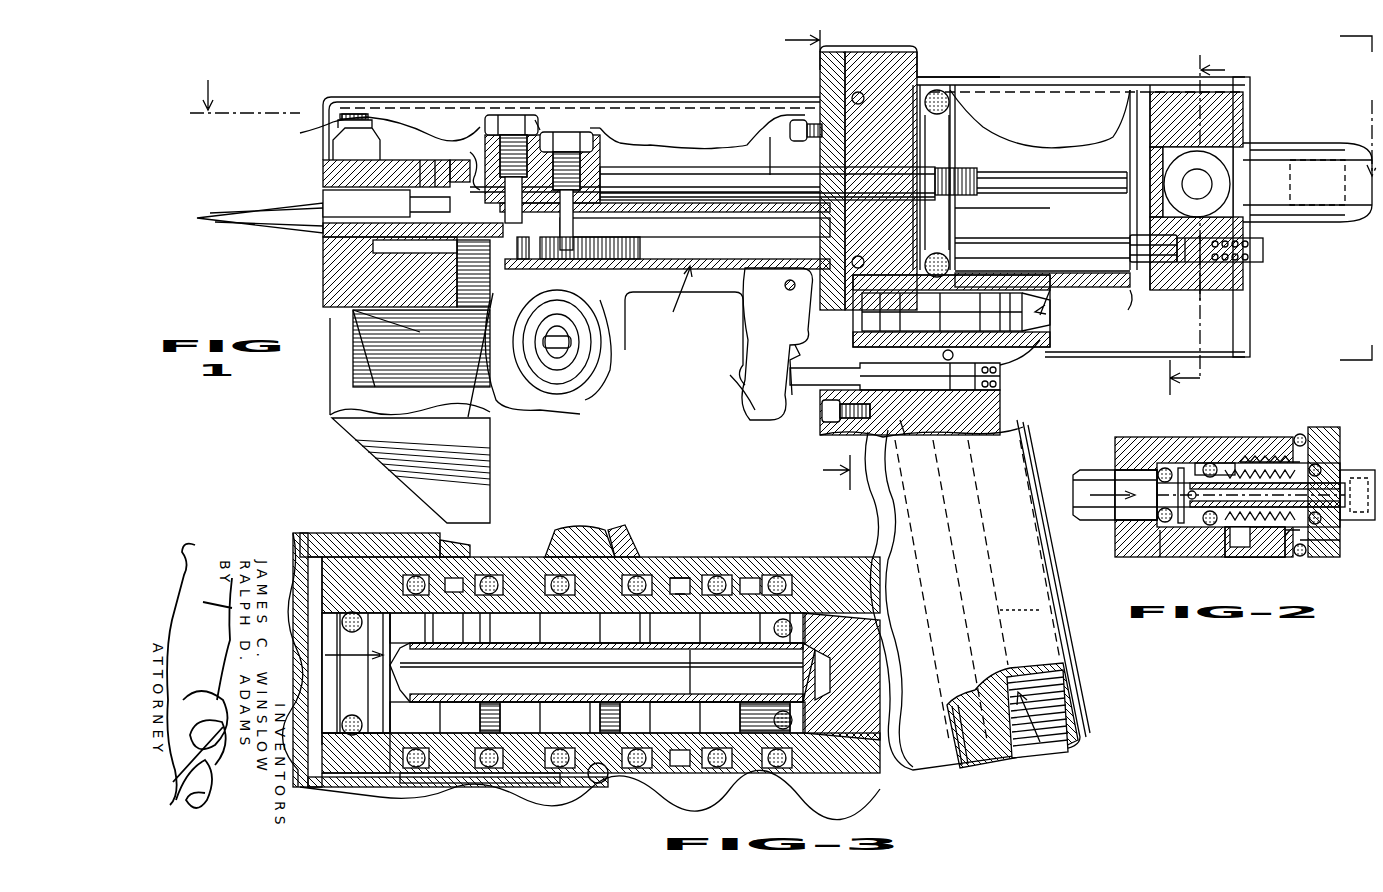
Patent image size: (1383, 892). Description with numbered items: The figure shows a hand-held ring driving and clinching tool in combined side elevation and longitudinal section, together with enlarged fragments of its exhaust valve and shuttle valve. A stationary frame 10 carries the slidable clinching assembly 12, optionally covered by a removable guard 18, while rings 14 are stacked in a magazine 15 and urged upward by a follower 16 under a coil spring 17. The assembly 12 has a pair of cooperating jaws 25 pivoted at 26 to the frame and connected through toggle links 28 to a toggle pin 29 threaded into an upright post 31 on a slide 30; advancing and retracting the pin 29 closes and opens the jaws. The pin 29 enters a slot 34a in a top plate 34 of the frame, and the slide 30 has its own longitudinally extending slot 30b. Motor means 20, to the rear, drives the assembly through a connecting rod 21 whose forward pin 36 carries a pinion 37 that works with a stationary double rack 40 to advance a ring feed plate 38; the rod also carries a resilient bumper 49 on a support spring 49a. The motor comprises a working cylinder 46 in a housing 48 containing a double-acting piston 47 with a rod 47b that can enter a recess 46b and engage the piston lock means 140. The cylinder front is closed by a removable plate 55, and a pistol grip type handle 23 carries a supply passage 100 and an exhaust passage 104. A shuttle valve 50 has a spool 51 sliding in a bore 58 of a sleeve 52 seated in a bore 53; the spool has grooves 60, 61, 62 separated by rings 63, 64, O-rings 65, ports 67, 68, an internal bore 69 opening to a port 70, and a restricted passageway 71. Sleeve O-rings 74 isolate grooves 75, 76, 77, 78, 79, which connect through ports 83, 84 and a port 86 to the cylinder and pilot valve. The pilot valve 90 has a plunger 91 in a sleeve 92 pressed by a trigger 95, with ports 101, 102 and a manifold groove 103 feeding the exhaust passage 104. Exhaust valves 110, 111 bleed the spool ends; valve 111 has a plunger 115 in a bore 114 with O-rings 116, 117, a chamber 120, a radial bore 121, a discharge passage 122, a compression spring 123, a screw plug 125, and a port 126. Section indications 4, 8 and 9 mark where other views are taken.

In FIG. 1, the section line 4- 4 is at (780, 127).
In FIG. 1, the section line 8- 8 is at (807, 260).
In FIG. 1, the section line 9- 9 is at (1204, 225).
In FIG. 1, the stationary frame 10 is at (1022, 207).
In FIG. 1, the clinching assembly 12 is at (410, 154).
In FIG. 1, the rings 14 is at (336, 322).
In FIG. 1, the magazine 15 is at (490, 415).
In FIG. 1, the follower 16 is at (421, 357).
In FIG. 1, the coil spring 17 is at (575, 405).
In FIG. 1, the removable guard 18 is at (698, 120).
In FIG. 1, the motor means 20 is at (1050, 89).
In FIG. 1, the connecting rod 21 is at (788, 182).
In FIG. 1, the pistol grip type handle 23 is at (1020, 600).
In FIG. 1, the cooperating jaws 25 is at (300, 205).
In FIG. 1, the jaw pivot 26 is at (333, 128).
In FIG. 1, the toggle links 28 is at (462, 165).
In FIG. 1, the toggle pin 29 is at (520, 113).
In FIG. 1, the slide 30 is at (522, 260).
In FIG. 1, the longitudinally extending slot 30b is at (655, 205).
In FIG. 1, the upright post 31 is at (565, 130).
In FIG. 1, the top plate 34 is at (820, 195).
In FIG. 1, the slot 34a is at (633, 268).
In FIG. 1, the pin 36 is at (590, 148).
In FIG. 1, the pinion 37 is at (590, 260).
In FIG. 1, the ring feed plate 38 is at (340, 258).
In FIG. 1, the stationary double rack 40 is at (740, 275).
In FIG. 1, the working cylinder 46 is at (1042, 245).
In FIG. 1, the recess 46b is at (1307, 182).
In FIG. 1, the double-acting piston 47 is at (1010, 212).
In FIG. 3, the double-acting piston 47 is at (632, 530).
In FIG. 1, the rod 47b is at (1050, 165).
In FIG. 1, the motor housing 48 is at (1220, 115).
In FIG. 2, the motor housing 48 is at (1125, 455).
In FIG. 3, the motor housing 48 is at (719, 558).
In FIG. 1, the resilient bumper 49 is at (595, 128).
In FIG. 1, the support spring 49a is at (535, 118).
In FIG. 1, the shuttle valve 50 is at (1050, 310).
In FIG. 1, the spool 51 is at (951, 311).
In FIG. 3, the spool 51 is at (455, 655).
In FIG. 3, the sleeve 52 is at (818, 568).
In FIG. 3, the bore 53 is at (385, 600).
In FIG. 1, the removable plate 55 is at (752, 340).
In FIG. 3, the removable plate 55 is at (320, 545).
In FIG. 3, the bore 58 is at (425, 616).
In FIG. 3, the annular groove 60 is at (597, 717).
In FIG. 3, the annular groove 61 is at (570, 715).
In FIG. 3, the annular groove 62 is at (695, 715).
In FIG. 3, the ring 63 is at (530, 640).
In FIG. 3, the ring 64 is at (640, 643).
In FIG. 3, the O-rings 65 is at (360, 735).
In FIG. 3, the port 67 is at (345, 765).
In FIG. 1, the port 68 is at (945, 248).
In FIG. 3, the port 68 is at (350, 610).
In FIG. 3, the internal bore 69 is at (716, 672).
In FIG. 1, the port 70 is at (1050, 325).
In FIG. 3, the port 70 is at (885, 675).
In FIG. 3, the passageway 71 is at (580, 650).
In FIG. 3, the O-rings 74 is at (590, 530).
In FIG. 3, the annular groove 75 is at (460, 575).
In FIG. 3, the annular groove 76 is at (548, 555).
In FIG. 3, the annular groove 77 is at (635, 570).
In FIG. 3, the annular groove 78 is at (680, 575).
In FIG. 3, the annular groove 79 is at (760, 575).
In FIG. 1, the port 83 is at (985, 262).
In FIG. 3, the port 83 is at (515, 570).
In FIG. 3, the port 84 is at (600, 785).
In FIG. 1, the port 86 is at (1135, 300).
In FIG. 1, the pilot valve 90 is at (1010, 385).
In FIG. 1, the plunger 91 is at (895, 376).
In FIG. 3, the sleeve 92 is at (480, 785).
In FIG. 1, the trigger 95 is at (748, 395).
In FIG. 1, the passage 100 is at (1015, 440).
In FIG. 1, the port 101 is at (1010, 368).
In FIG. 1, the port 102 is at (945, 432).
In FIG. 3, the port 102 is at (545, 785).
In FIG. 3, the manifold groove 103 is at (445, 770).
In FIG. 1, the exhaust passage 104 is at (895, 425).
In FIG. 1, the exhaust valve 110 is at (845, 117).
In FIG. 1, the exhaust valve 111 is at (1275, 267).
In FIG. 2, the exhaust valve 111 is at (1328, 420).
In FIG. 2, the bore 114 is at (1175, 530).
In FIG. 1, the plunger 115 is at (1133, 250).
In FIG. 2, the plunger 115 is at (1100, 515).
In FIG. 2, the O-ring 116 is at (1163, 468).
In FIG. 2, the O-ring 117 is at (1215, 462).
In FIG. 2, the chamber 120 is at (1250, 458).
In FIG. 2, the radial bore 121 is at (1181, 468).
In FIG. 2, the discharge passage 122 is at (1330, 505).
In FIG. 2, the compression spring 123 is at (1335, 445).
In FIG. 2, the screw plug 125 is at (1320, 550).
In FIG. 1, the port 126 is at (1205, 295).
In FIG. 2, the port 126 is at (1238, 550).
In FIG. 1, the piston lock means 140 is at (1165, 200).